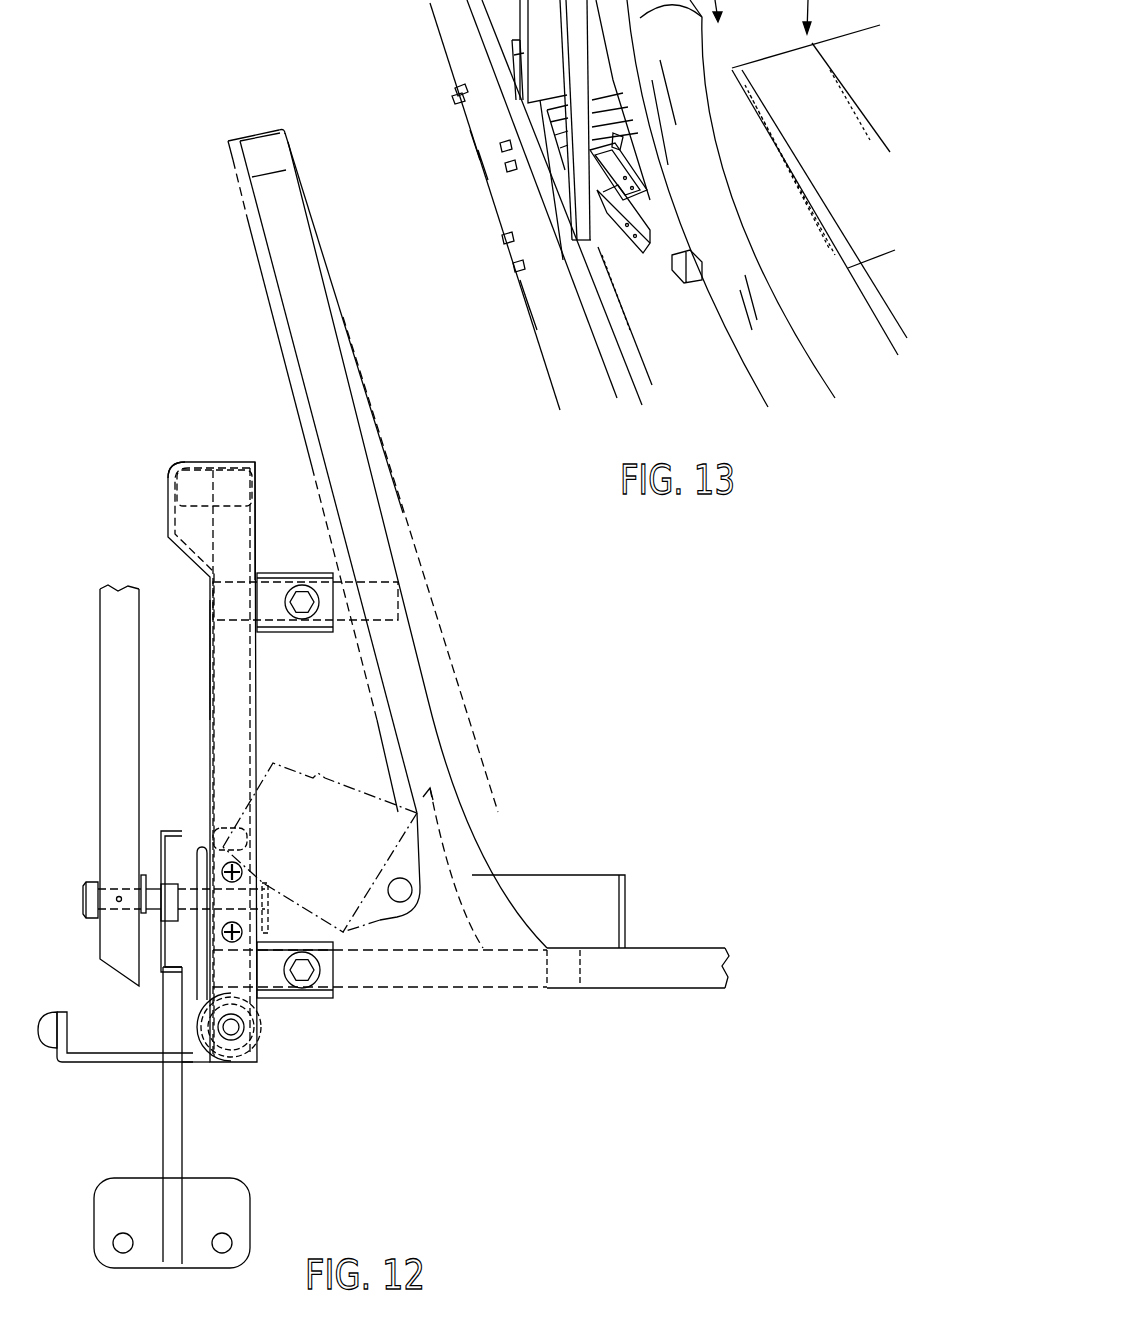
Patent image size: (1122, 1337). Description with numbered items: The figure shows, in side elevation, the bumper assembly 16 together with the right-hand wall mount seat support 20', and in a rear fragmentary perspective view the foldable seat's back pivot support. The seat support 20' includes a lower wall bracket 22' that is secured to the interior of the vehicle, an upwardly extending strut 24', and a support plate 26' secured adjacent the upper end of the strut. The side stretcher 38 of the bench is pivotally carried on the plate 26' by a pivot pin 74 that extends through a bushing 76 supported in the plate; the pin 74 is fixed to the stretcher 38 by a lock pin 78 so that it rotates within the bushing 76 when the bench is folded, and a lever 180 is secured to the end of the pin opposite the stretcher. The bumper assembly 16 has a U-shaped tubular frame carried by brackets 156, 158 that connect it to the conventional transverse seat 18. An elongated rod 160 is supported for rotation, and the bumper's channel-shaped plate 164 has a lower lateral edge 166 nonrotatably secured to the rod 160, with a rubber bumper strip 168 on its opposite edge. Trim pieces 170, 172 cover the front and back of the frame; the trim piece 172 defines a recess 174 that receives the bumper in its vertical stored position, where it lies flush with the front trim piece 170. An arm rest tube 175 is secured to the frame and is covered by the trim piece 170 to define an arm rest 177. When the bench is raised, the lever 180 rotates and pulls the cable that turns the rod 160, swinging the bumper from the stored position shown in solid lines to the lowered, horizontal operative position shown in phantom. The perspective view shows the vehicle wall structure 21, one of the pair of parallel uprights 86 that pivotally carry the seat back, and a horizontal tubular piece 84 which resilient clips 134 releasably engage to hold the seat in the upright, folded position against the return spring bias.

In FIG. 12, the bumper assembly 16 is at (227, 443).
In FIG. 12, the conventional transverse seat 18 is at (401, 480).
In FIG. 12, the arm rest tube 175 is at (190, 462).
In FIG. 12, the arm rest 177 is at (168, 492).
In FIG. 12, the trim piece 172 is at (245, 547).
In FIG. 12, the bracket 156 is at (287, 573).
In FIG. 12, the trim piece 170 is at (211, 661).
In FIG. 12, the side stretcher 38 is at (114, 635).
In FIG. 12, the lock pin 78 is at (117, 896).
In FIG. 12, the bushing 76 is at (172, 922).
In FIG. 12, the pivot pin 74 is at (176, 884).
In FIG. 12, the support plate 26' is at (160, 886).
In FIG. 12, the channel-shaped plate 164 is at (199, 845).
In FIG. 12, the recess 174 is at (212, 797).
In FIG. 12, the lever 180 is at (268, 912).
In FIG. 12, the rubber bumper strip 168 is at (228, 848).
In FIG. 12, the bracket 158 is at (308, 938).
In FIG. 12, the lower lateral edge 166 is at (258, 998).
In FIG. 12, the elongated rod 160 is at (240, 1028).
In FIG. 12, the seat support 20' is at (183, 1070).
In FIG. 12, the strut 24' is at (137, 1115).
In FIG. 12, the lower wall bracket 22' is at (214, 1221).
In FIG. 13, the wall structure 21 is at (465, 65).
In FIG. 13, the upright 86 is at (575, 50).
In FIG. 13, the horizontal tubular piece 84 is at (628, 347).
In FIG. 13, the resilient clip 134 is at (690, 250).